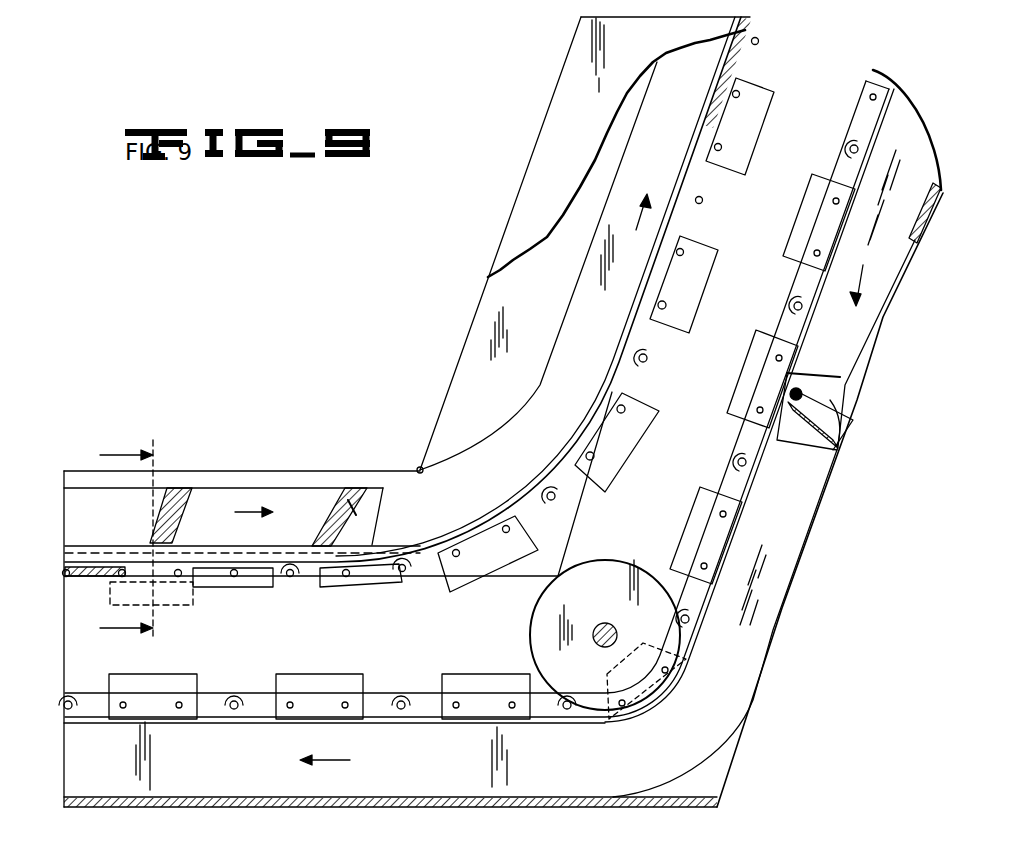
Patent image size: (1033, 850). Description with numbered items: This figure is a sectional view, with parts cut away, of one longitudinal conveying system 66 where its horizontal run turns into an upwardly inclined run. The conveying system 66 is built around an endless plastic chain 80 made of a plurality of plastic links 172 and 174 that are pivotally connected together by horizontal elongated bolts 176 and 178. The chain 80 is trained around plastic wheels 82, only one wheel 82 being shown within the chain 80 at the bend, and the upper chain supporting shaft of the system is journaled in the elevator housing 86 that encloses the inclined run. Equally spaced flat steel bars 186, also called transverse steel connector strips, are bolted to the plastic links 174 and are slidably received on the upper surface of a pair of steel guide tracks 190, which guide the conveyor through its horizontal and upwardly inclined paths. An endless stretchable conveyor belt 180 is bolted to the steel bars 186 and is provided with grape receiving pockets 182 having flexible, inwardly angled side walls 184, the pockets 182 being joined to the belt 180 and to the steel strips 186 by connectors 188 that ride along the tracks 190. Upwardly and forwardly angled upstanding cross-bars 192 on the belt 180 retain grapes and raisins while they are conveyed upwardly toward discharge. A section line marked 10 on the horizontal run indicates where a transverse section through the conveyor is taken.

The section line 10- 10 is at (171, 542).
The longitudinal conveying system 66 is at (853, 58).
The endless plastic chain 80 is at (868, 92).
The plastic wheel 82 is at (543, 640).
The elevator housing 86 is at (530, 193).
The plastic link 172 is at (843, 154).
The plastic link 174 is at (747, 135).
The elongated bolt 176 is at (648, 359).
The elongated bolt 178 is at (666, 305).
The endless stretchable conveyor belt 180 is at (217, 582).
The grape receiving pocket 182 is at (88, 490).
The flexible side wall 184 is at (331, 493).
The flat steel bar 186 is at (835, 240).
The connector 188 is at (178, 486).
The steel guide track 190 is at (586, 455).
The upstanding cross-bar 192 is at (840, 425).